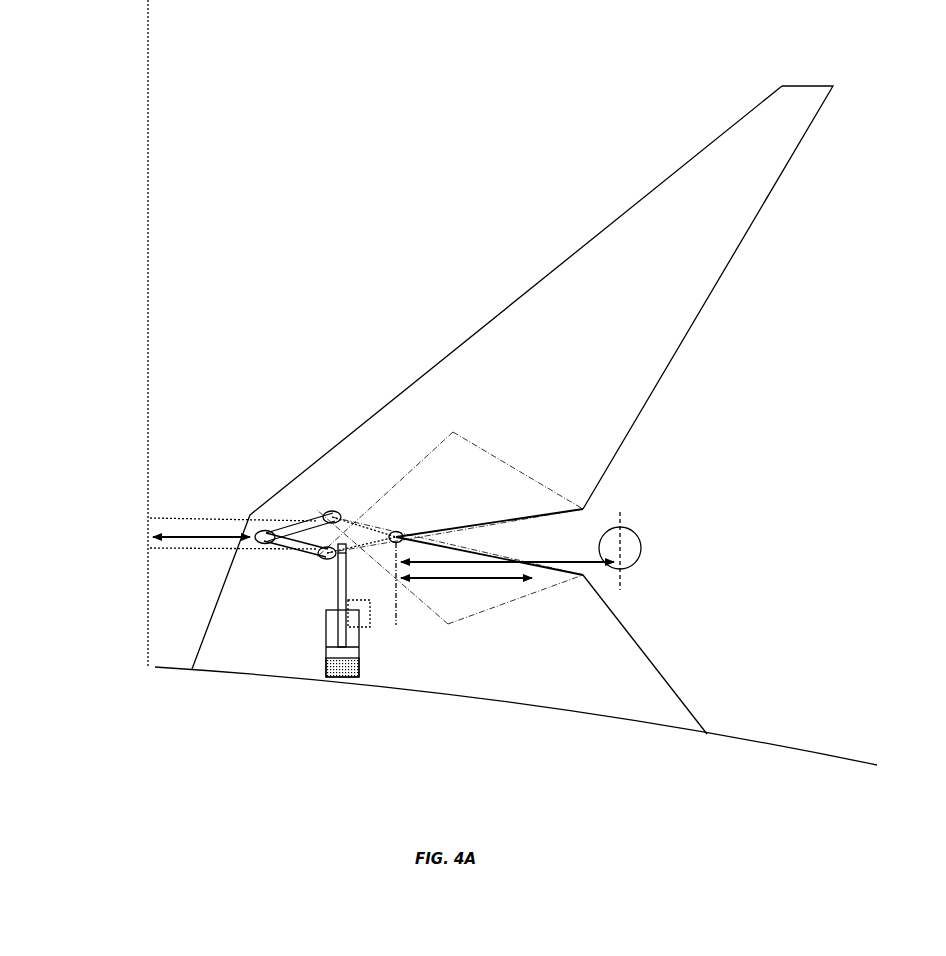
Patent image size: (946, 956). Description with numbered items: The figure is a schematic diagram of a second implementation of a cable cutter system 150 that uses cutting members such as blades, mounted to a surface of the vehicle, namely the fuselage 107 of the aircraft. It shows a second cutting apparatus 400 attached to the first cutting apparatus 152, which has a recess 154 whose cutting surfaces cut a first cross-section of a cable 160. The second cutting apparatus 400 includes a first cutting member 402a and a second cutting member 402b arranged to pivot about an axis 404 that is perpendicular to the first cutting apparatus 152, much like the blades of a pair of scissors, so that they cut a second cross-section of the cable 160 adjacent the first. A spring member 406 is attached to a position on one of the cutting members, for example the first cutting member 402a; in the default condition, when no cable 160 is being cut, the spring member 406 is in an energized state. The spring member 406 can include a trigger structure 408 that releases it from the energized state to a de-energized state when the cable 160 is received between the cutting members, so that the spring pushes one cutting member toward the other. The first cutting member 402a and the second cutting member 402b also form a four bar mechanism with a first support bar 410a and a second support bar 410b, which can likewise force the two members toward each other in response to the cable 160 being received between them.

The fuselage 107 is at (782, 750).
The cable cutter system 150 is at (855, 105).
The first cutting apparatus 152 is at (750, 184).
The recess 154 is at (560, 527).
The cable 160 is at (642, 550).
The second cutting apparatus 400 is at (527, 648).
The first cutting member 402a is at (502, 475).
The second cutting member 402b is at (550, 578).
The axis 404 is at (393, 531).
The spring member 406 is at (343, 677).
The trigger structure 408 is at (370, 613).
The first support bar 410a is at (148, 518).
The second support bar 410b is at (148, 548).